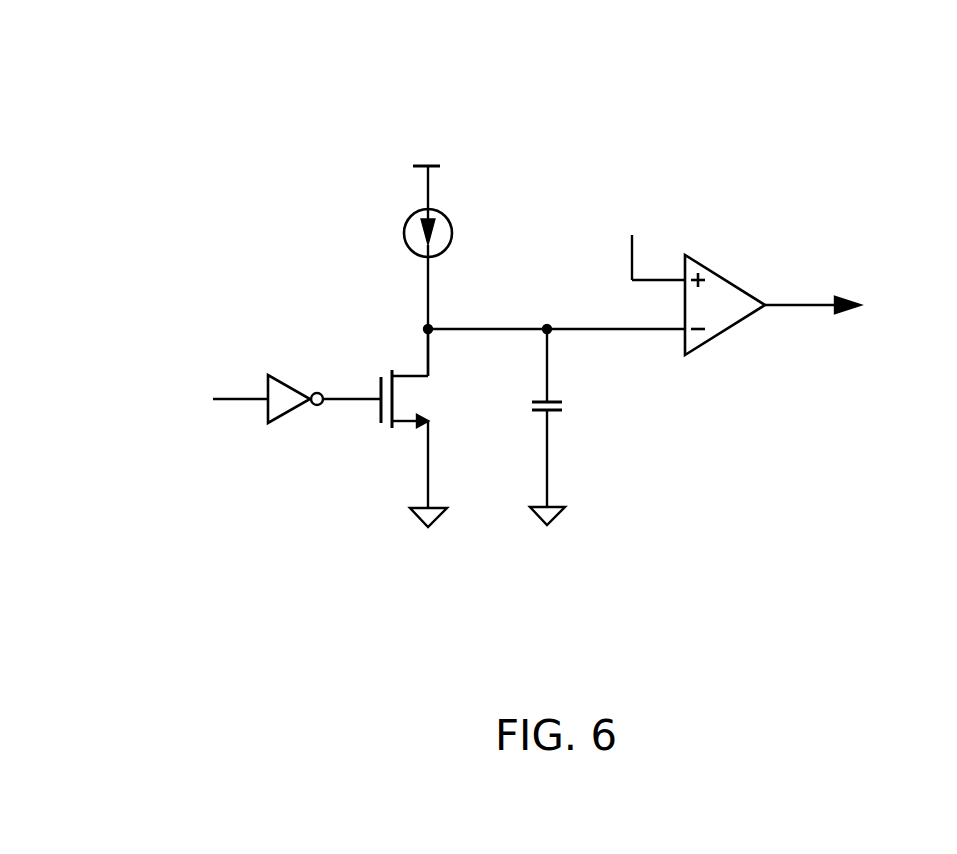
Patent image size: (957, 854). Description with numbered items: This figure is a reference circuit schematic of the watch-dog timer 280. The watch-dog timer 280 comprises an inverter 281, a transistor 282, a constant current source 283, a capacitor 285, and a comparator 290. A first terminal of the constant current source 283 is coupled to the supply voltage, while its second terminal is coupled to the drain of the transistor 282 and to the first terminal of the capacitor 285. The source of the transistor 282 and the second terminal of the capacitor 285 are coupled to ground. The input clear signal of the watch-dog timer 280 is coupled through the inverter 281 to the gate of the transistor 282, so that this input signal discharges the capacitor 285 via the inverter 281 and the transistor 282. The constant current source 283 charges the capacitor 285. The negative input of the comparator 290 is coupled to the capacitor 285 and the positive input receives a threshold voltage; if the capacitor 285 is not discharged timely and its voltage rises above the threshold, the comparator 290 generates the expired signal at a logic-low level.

The watch-dog timer 280 is at (850, 82).
The inverter 281 is at (295, 387).
The transistor 282 is at (426, 378).
The constant current source 283 is at (403, 233).
The capacitor 285 is at (570, 406).
The comparator 290 is at (728, 302).